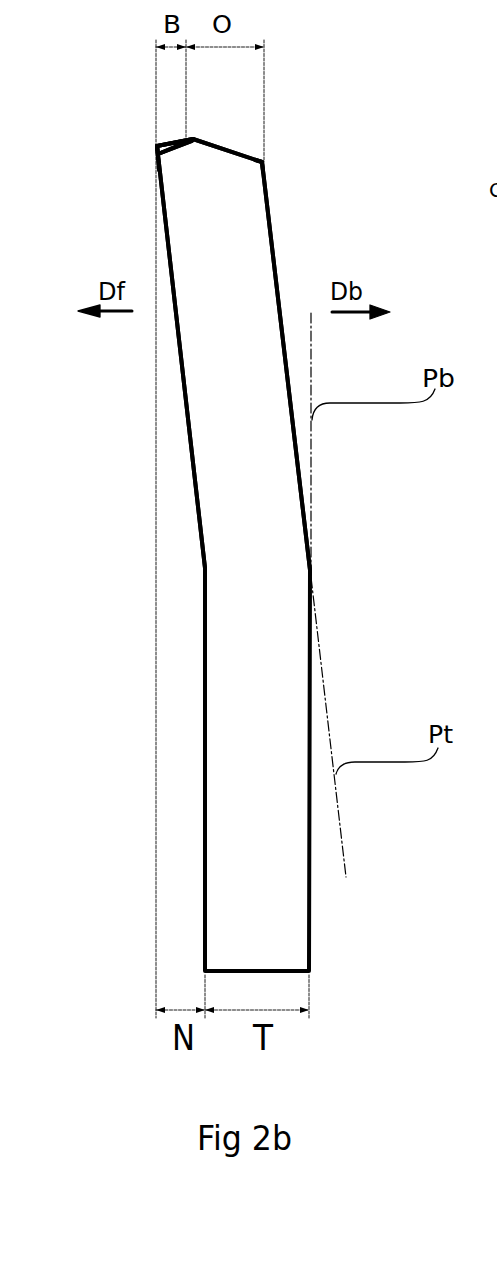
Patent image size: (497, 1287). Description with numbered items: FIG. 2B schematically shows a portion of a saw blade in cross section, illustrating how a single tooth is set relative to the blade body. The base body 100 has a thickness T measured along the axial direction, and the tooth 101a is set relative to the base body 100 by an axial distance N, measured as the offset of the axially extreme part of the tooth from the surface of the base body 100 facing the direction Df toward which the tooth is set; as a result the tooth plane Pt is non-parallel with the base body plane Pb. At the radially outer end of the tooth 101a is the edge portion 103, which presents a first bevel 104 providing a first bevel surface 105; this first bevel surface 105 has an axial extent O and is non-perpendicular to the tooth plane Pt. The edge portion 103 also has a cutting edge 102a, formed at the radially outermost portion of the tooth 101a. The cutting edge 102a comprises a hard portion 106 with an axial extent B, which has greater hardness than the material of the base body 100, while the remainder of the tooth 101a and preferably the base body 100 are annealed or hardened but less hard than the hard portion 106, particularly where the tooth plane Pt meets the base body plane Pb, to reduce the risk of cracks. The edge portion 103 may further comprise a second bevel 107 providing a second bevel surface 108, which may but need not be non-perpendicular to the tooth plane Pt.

The base body 100 is at (245, 786).
The tooth 101a is at (182, 402).
The cutting edge 102a is at (190, 137).
The edge portion 103 is at (282, 187).
The first bevel 104 is at (262, 162).
The first bevel surface 105 is at (230, 152).
The hard portion 106 is at (157, 147).
The second bevel 107 is at (157, 163).
The second bevel surface 108 is at (167, 140).